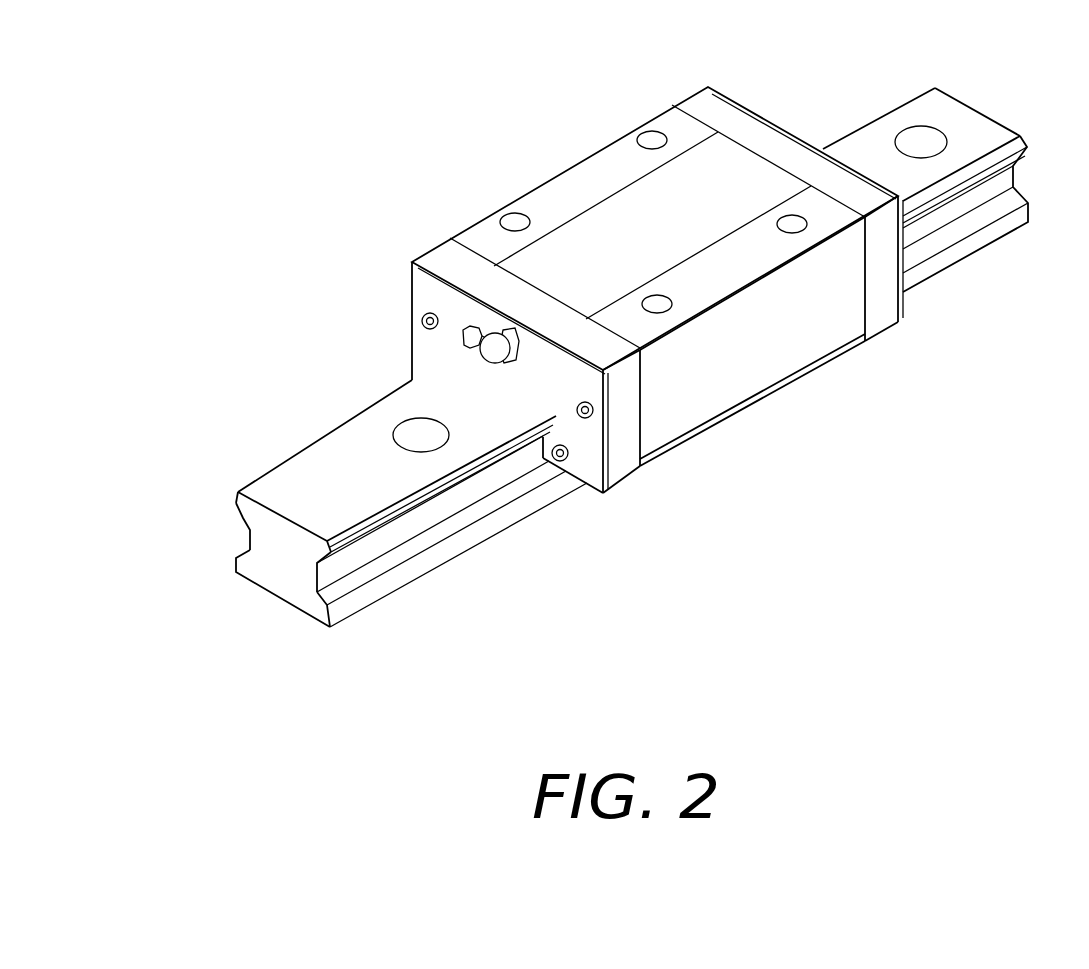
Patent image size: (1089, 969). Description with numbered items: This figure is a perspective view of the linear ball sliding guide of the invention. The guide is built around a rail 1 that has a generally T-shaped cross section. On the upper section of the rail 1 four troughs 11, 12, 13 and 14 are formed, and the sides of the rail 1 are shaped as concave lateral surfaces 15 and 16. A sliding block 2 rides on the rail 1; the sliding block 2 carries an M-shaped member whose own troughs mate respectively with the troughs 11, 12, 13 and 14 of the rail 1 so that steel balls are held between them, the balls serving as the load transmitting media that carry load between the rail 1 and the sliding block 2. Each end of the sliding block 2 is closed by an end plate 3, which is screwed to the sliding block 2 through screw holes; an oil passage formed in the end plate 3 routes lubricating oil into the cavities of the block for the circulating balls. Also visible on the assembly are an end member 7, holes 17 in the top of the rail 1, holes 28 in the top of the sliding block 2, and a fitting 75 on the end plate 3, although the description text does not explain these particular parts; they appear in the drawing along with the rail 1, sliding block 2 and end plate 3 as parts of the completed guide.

The rail 1 is at (928, 108).
The sliding block 2 is at (692, 412).
The end plate 3 is at (873, 313).
The end plate 7 is at (737, 100).
The trough 11 is at (333, 537).
The trough 12 is at (240, 492).
The trough 13 is at (330, 580).
The trough 14 is at (240, 510).
The concave lateral surface 15 is at (325, 567).
The concave lateral surface 16 is at (242, 537).
The rail mounting hole 17 is at (407, 433).
The slider mounting hole 28 is at (516, 220).
The grease nipple 75 is at (492, 356).